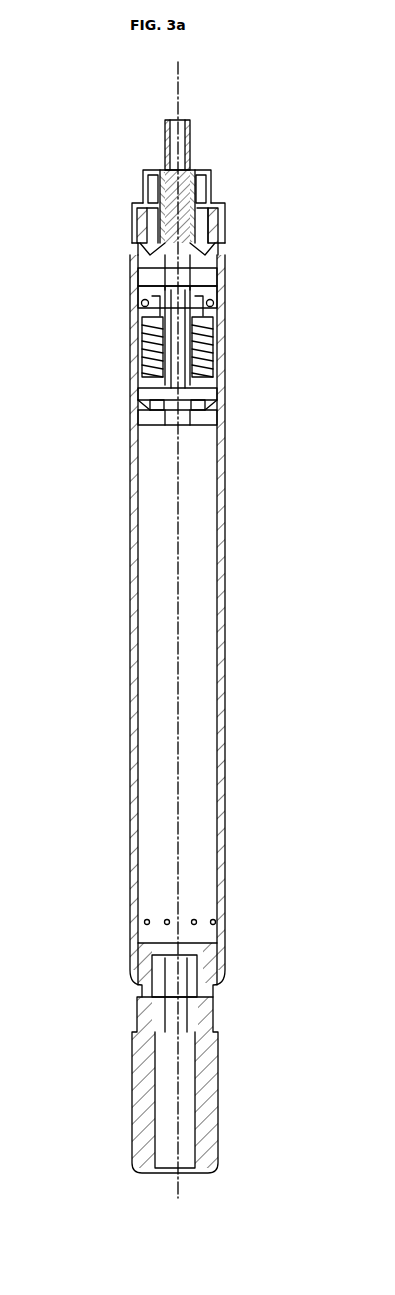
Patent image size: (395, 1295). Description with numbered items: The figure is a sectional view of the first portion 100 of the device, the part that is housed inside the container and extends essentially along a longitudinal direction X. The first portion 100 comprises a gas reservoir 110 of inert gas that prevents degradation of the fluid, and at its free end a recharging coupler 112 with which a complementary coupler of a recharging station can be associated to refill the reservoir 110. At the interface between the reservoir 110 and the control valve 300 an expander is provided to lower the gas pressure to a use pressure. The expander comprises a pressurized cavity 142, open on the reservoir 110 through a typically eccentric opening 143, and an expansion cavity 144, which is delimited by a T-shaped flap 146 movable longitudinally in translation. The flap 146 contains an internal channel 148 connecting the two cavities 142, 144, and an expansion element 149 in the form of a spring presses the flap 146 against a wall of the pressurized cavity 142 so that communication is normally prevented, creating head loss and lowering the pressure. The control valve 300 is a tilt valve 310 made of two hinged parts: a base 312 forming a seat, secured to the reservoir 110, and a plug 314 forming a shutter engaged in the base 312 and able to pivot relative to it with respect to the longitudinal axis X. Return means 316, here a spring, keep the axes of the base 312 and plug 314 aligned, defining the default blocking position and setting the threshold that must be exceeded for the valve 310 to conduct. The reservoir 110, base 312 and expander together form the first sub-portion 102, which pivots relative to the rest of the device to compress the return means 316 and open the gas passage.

The longitudinal direction X is at (180, 83).
The first portion 100 is at (296, 122).
The first sub-portion 102 is at (311, 648).
The gas reservoir 110 is at (195, 690).
The recharging coupler 112 is at (187, 1092).
The pressurized cavity 142 is at (152, 405).
The eccentric opening 143 is at (156, 418).
The expansion cavity 144 is at (205, 275).
The flap 146 is at (160, 327).
The internal channel 148 is at (182, 344).
The expansion element 149 is at (195, 330).
The control valve 300 is at (114, 124).
The tilt valve 310 is at (100, 197).
The base 312 is at (216, 188).
The plug 314 is at (200, 152).
The return means 316 is at (186, 231).